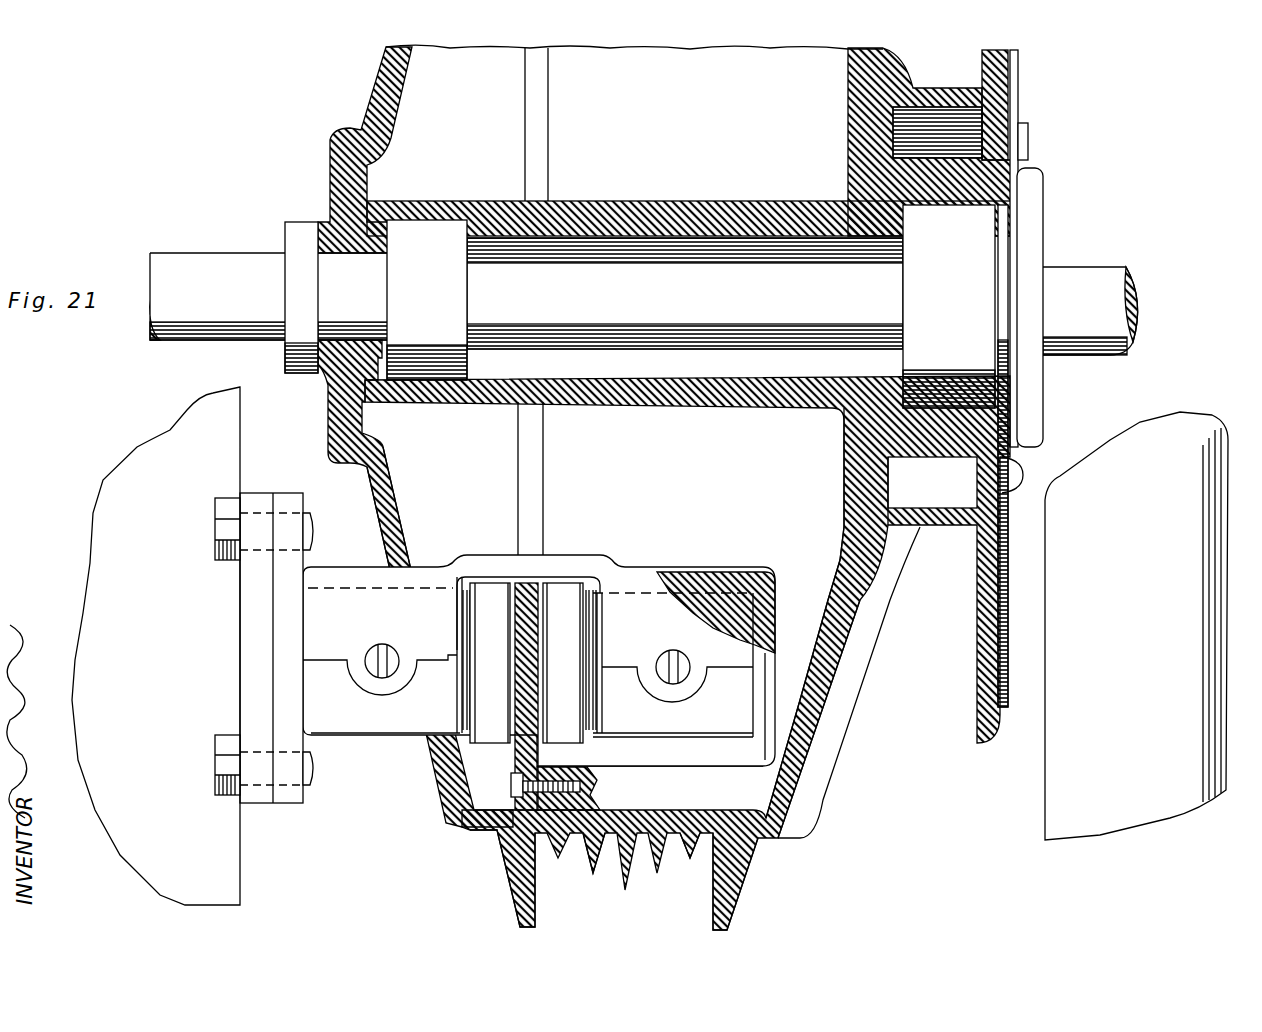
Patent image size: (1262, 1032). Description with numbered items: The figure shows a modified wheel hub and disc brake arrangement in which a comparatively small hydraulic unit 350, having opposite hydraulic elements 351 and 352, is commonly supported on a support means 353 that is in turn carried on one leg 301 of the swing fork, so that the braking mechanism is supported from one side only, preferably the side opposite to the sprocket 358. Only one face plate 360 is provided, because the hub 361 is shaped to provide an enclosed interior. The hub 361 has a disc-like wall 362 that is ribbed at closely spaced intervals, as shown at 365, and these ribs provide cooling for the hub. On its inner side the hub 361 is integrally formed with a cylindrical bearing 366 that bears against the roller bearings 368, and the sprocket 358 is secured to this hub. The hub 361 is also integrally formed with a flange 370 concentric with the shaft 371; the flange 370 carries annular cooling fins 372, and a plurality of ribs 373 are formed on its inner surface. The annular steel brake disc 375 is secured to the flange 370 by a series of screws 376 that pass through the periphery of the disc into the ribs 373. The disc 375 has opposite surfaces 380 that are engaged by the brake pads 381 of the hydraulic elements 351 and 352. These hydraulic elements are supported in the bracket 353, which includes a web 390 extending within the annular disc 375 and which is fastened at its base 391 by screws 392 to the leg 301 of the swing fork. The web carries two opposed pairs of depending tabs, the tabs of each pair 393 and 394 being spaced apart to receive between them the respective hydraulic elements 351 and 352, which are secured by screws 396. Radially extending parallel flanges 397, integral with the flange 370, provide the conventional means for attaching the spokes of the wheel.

The swing fork leg 301 is at (162, 462).
The hydraulic unit 350 is at (665, 535).
The hydraulic element 351 is at (352, 747).
The hydraulic element 352 is at (712, 608).
The support means 353 is at (433, 557).
The sprocket 358 is at (973, 620).
The face plate 360 is at (390, 463).
The hub 361 is at (842, 483).
The disc-like wall 362 is at (848, 603).
The ribs 365 is at (832, 747).
The cylindrical bearing 366 is at (790, 393).
The roller bearings 368 is at (418, 262).
The flange 370 is at (677, 827).
The shaft 371 is at (670, 280).
The annular cooling fins 372 is at (590, 873).
The ribs 373 is at (728, 786).
The steel brake disc 375 is at (537, 637).
The screws 376 is at (497, 762).
The opposite surfaces 380 is at (517, 613).
The brake pads 381 is at (553, 717).
The web 390 is at (552, 555).
The base 391 is at (287, 503).
The screws 392 is at (317, 530).
The tabs 393 is at (725, 647).
The tabs 394 is at (323, 635).
The screws 396 is at (370, 655).
The radially extending parallel flanges 397 is at (517, 852).